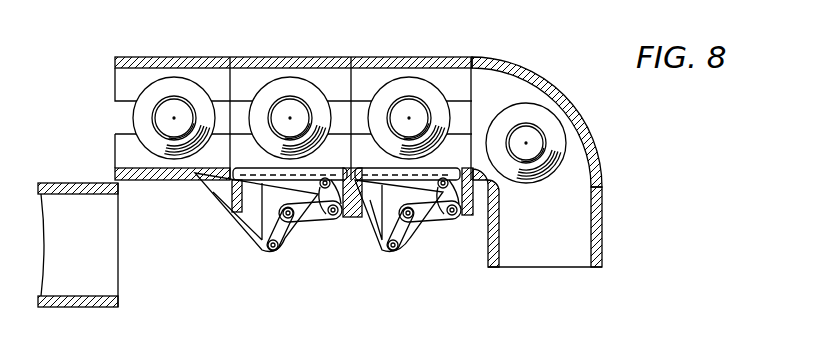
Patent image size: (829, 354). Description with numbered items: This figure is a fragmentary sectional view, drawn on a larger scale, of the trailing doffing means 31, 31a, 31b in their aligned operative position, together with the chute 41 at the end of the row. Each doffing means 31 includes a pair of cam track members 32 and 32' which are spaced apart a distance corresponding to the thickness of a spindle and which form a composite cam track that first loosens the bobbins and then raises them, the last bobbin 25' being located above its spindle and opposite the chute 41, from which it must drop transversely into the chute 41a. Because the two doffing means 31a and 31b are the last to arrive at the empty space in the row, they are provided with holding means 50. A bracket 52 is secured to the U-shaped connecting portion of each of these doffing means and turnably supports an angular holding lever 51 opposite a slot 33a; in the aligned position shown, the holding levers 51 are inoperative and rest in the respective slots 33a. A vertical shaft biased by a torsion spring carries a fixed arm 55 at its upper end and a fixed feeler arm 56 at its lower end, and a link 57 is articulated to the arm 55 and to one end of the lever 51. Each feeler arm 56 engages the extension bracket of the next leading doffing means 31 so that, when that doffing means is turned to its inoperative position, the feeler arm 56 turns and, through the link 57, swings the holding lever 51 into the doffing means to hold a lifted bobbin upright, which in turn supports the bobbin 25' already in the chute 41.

The doffing means 31 is at (172, 58).
The doffing means 31a is at (290, 58).
The doffing means 31b is at (407, 58).
The cam track member 32 is at (274, 84).
The cam track member 32' is at (274, 151).
The bobbin 25' is at (551, 137).
The chute 41 is at (521, 69).
The chute 41a is at (601, 263).
The slot 33a is at (334, 168).
The holding means 50 is at (301, 234).
The angular lever 51 is at (425, 220).
The bracket 52 is at (468, 217).
The arm 55 is at (287, 235).
The feeler arm 56 is at (216, 200).
The link 57 is at (324, 222).